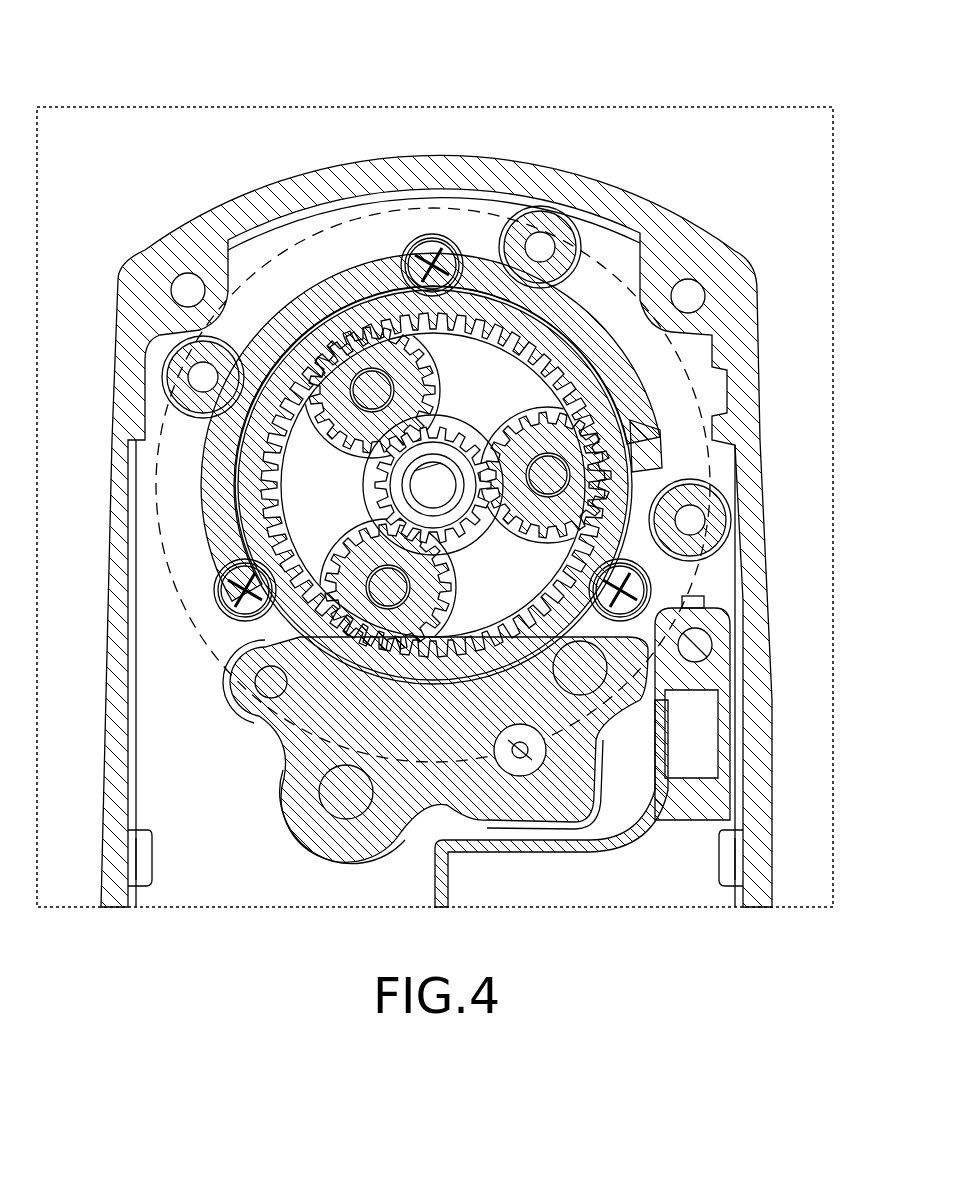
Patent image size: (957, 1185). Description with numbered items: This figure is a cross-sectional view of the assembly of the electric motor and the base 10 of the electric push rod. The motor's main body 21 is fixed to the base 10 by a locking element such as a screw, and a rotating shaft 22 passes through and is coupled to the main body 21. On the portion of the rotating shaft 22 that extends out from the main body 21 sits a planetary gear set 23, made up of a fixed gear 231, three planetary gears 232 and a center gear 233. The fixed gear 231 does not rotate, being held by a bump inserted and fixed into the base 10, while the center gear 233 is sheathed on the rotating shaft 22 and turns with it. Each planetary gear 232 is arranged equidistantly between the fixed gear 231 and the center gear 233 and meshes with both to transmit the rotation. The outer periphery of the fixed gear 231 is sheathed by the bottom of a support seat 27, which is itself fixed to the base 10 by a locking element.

The base 10 is at (762, 585).
The main body 21 is at (698, 240).
The rotating shaft 22 is at (433, 487).
The planetary gear set 23 is at (353, 70).
The fixed gear 231 is at (530, 320).
The planetary gears 232 is at (352, 300).
The center gear 233 is at (455, 435).
The support seat 27 is at (653, 455).